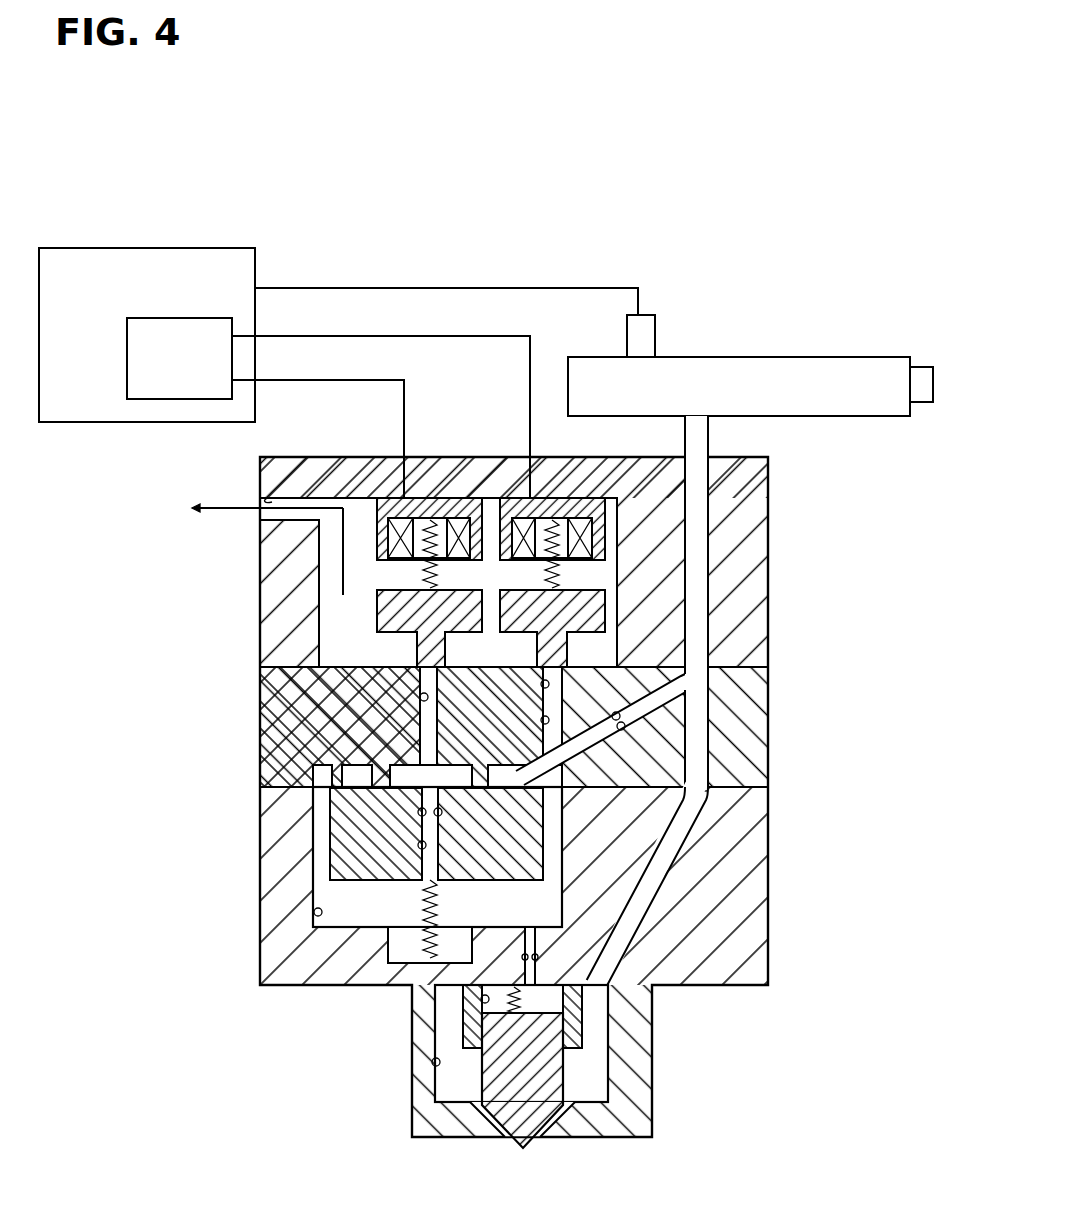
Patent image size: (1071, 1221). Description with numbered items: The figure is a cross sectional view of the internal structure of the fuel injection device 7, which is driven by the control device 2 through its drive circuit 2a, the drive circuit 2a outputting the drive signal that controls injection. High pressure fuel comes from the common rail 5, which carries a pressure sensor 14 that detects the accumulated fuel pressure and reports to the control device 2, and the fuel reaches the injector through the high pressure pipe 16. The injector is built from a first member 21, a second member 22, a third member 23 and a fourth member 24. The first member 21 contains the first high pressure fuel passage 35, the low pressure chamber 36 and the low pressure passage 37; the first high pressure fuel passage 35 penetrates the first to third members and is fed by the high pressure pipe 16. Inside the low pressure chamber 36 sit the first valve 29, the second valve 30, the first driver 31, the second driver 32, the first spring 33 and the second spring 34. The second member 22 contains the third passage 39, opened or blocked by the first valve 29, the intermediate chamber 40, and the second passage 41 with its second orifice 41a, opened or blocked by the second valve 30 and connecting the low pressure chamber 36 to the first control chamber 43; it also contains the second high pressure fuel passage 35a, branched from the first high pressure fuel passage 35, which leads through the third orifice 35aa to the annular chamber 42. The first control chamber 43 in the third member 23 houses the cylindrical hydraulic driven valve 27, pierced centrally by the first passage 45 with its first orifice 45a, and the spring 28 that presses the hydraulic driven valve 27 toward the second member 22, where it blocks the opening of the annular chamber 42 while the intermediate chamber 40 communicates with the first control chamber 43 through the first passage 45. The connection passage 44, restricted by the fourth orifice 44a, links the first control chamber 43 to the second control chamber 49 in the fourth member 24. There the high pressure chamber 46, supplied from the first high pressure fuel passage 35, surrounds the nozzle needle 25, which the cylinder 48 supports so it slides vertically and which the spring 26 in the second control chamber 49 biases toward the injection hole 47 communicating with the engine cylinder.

The control device 2 is at (148, 248).
The drive circuit 2a is at (127, 355).
The common rail 5 is at (818, 357).
The fuel injection device 7 is at (833, 499).
The pressure sensor 14 is at (655, 330).
The high pressure pipe 16 is at (700, 440).
The first member 21 is at (755, 598).
The second member 22 is at (755, 706).
The third member 23 is at (740, 885).
The fourth member 24 is at (635, 1081).
The nozzle needle 25 is at (580, 1136).
The spring 26 is at (562, 994).
The hydraulic driven valve 27 is at (340, 835).
The spring 28 is at (430, 950).
The first valve 29 is at (390, 612).
The second valve 30 is at (605, 613).
The first driver 31 is at (400, 500).
The second driver 32 is at (520, 512).
The first spring 33 is at (435, 535).
The second spring 34 is at (552, 535).
The first high pressure fuel passage 35 is at (700, 568).
The second high pressure fuel passage 35a is at (610, 712).
The third orifice 35aa is at (650, 745).
The low pressure chamber 36 is at (328, 558).
The low pressure passage 37 is at (272, 502).
The third passage 39 is at (422, 702).
The intermediate chamber 40 is at (410, 768).
The second passage 41 is at (395, 745).
The second orifice 41a is at (540, 686).
The annular chamber 42 is at (530, 778).
The first control chamber 43 is at (318, 912).
The connection passage 44 is at (538, 940).
The fourth orifice 44a is at (540, 962).
The first passage 45 is at (335, 868).
The first orifice 45a is at (418, 812).
The high pressure chamber 46 is at (436, 1066).
The injection hole 47 is at (545, 1150).
The cylinder 48 is at (575, 1032).
The second control chamber 49 is at (440, 1013).